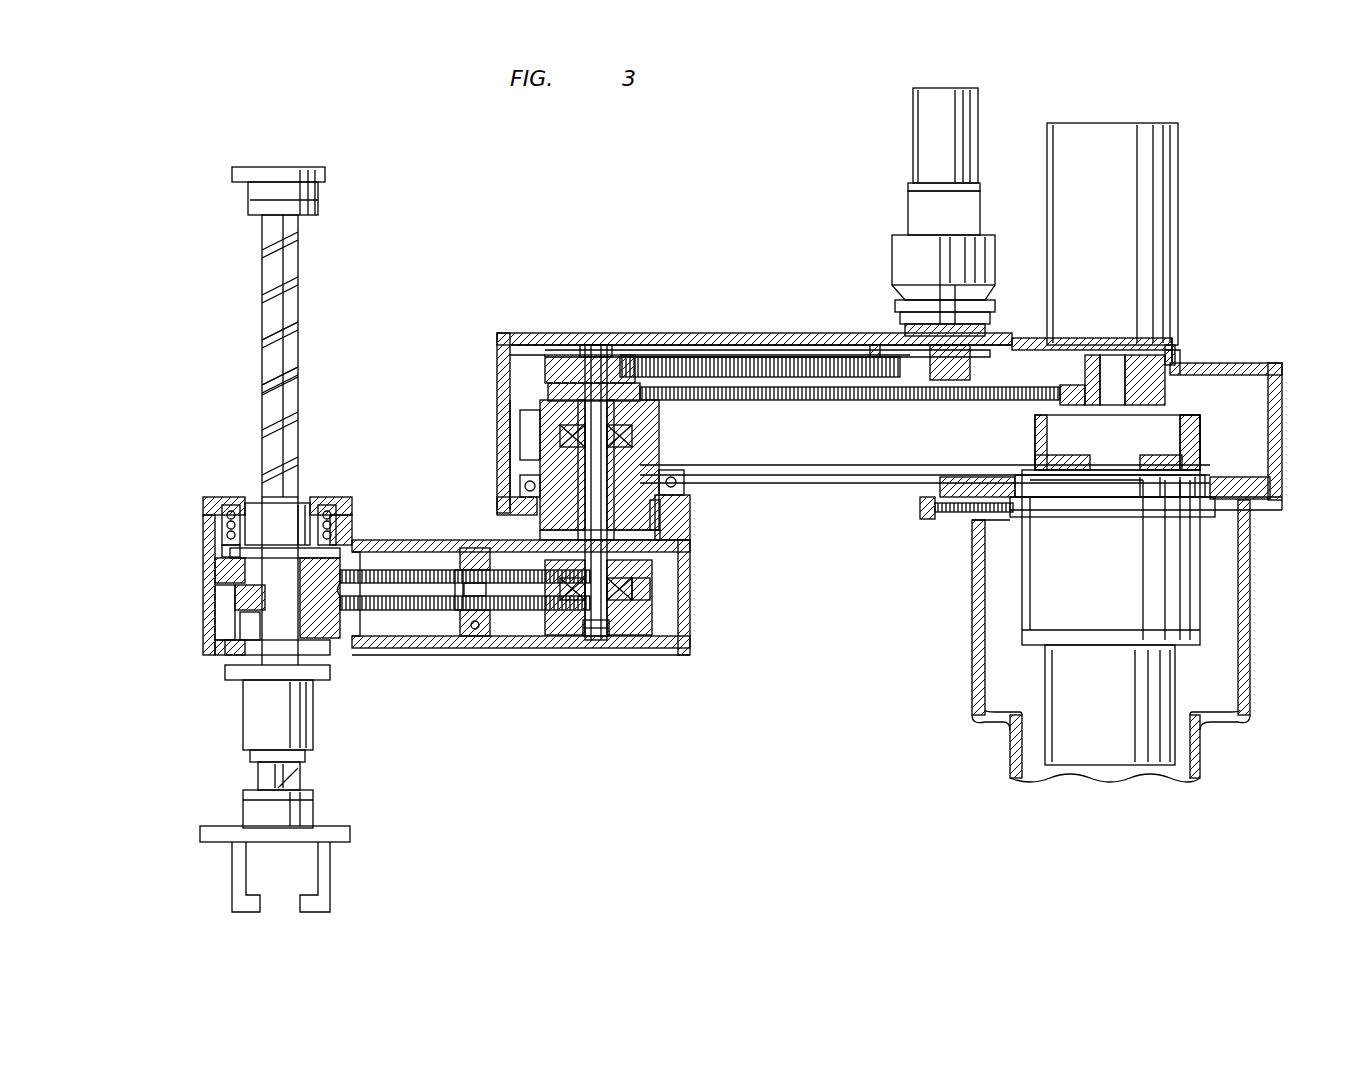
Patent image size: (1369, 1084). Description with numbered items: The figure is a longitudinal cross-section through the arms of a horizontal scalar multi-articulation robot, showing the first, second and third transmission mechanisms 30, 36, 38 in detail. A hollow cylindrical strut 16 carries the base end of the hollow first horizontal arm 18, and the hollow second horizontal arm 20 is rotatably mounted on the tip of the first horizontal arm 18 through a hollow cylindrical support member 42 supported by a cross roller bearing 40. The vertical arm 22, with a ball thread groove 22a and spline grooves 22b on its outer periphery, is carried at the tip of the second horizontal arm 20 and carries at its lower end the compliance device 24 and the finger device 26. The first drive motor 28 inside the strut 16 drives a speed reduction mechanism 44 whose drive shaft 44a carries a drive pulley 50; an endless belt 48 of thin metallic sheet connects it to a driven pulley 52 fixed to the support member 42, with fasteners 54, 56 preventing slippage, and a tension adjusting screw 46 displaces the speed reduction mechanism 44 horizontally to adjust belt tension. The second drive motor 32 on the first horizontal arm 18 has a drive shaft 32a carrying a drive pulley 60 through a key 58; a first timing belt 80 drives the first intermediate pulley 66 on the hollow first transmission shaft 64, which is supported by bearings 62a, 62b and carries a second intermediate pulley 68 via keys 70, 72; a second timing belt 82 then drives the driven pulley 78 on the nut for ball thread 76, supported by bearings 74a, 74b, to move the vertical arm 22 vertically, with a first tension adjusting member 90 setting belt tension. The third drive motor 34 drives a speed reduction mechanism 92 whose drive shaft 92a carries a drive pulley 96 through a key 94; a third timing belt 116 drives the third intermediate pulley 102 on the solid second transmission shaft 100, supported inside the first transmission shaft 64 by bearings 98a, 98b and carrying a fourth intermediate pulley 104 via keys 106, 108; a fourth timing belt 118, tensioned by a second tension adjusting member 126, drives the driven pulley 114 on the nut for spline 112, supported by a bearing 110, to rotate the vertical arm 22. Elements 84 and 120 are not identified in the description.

The strut 16 is at (985, 730).
The first horizontal arm 18 is at (1295, 330).
The second horizontal arm 20 is at (380, 540).
The vertical arm 22 is at (300, 292).
The ball thread groove 22a is at (262, 395).
The spline grooves 22b is at (290, 395).
The compliance device 24 is at (350, 834).
The finger device 26 is at (322, 902).
The first drive motor 28 is at (1160, 742).
The first transmission mechanism 30 is at (820, 492).
The second drive motor 32 is at (1165, 165).
The drive shaft 32a is at (1115, 405).
The third drive motor 34 is at (978, 100).
The second transmission mechanism 36 is at (870, 412).
The third transmission mechanism 38 is at (775, 380).
The cross roller bearing 40 is at (690, 520).
The hollow cylindrical support member 42 is at (680, 545).
The speed reduction mechanism 44 is at (1190, 615).
The drive shaft 44a is at (1113, 505).
The tension adjusting screw 46 is at (926, 520).
The endless belt 48 is at (848, 474).
The drive pulley 50 is at (1180, 468).
The driven pulley 52 is at (684, 482).
The fastener 54 is at (1200, 428).
The fastener 56 is at (497, 412).
The key 58 is at (1100, 355).
The drive pulley 60 is at (1140, 355).
The upper bearing 62a is at (640, 425).
The lower bearing 62b is at (652, 590).
The first transmission shaft 64 is at (640, 400).
The first intermediate pulley 66 is at (545, 385).
The second intermediate pulley 68 is at (655, 625).
The key 70 is at (555, 400).
The key 72 is at (572, 600).
The upper bearing 74a is at (222, 508).
The lower bearing 74b is at (222, 548).
The nut for ball thread 76 is at (258, 505).
The driven pulley 78 is at (235, 590).
The first timing belt 80 is at (760, 357).
The second timing belt 82 is at (405, 570).
The cover plate 84 is at (1180, 365).
The first tension adjusting member 90 is at (470, 548).
The speed reduction mechanism 92 is at (995, 250).
The drive shaft 92a is at (948, 325).
The key 94 is at (895, 305).
The drive pulley 96 is at (985, 326).
The upper bearing 98a is at (620, 430).
The lower bearing 98b is at (625, 605).
The second transmission shaft 100 is at (592, 345).
The third intermediate pulley 102 is at (607, 400).
The fourth intermediate pulley 104 is at (555, 636).
The key 106 is at (585, 345).
The key 108 is at (600, 640).
The bearing 110 is at (225, 655).
The nut for spline 112 is at (313, 735).
The driven pulley 114 is at (240, 620).
The third timing belt 116 is at (782, 350).
The fourth timing belt 118 is at (405, 612).
The bolt 120 is at (875, 345).
The second tension adjusting member 126 is at (462, 640).